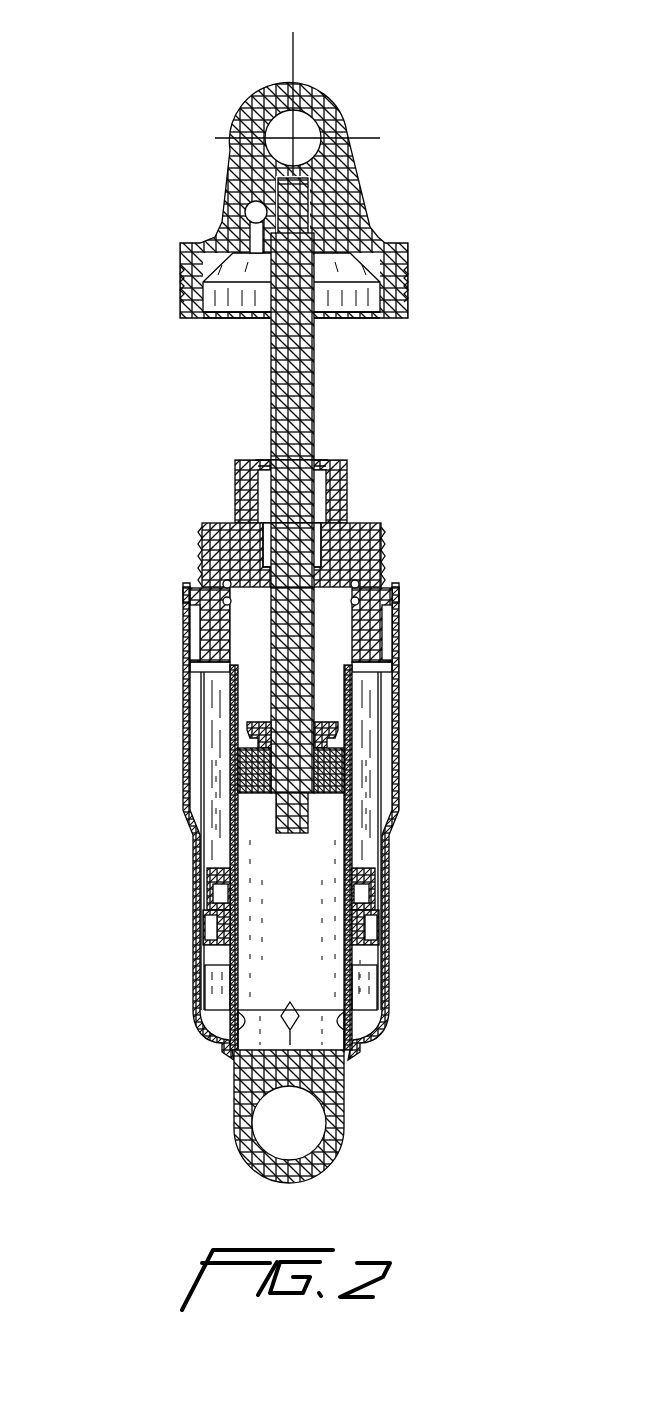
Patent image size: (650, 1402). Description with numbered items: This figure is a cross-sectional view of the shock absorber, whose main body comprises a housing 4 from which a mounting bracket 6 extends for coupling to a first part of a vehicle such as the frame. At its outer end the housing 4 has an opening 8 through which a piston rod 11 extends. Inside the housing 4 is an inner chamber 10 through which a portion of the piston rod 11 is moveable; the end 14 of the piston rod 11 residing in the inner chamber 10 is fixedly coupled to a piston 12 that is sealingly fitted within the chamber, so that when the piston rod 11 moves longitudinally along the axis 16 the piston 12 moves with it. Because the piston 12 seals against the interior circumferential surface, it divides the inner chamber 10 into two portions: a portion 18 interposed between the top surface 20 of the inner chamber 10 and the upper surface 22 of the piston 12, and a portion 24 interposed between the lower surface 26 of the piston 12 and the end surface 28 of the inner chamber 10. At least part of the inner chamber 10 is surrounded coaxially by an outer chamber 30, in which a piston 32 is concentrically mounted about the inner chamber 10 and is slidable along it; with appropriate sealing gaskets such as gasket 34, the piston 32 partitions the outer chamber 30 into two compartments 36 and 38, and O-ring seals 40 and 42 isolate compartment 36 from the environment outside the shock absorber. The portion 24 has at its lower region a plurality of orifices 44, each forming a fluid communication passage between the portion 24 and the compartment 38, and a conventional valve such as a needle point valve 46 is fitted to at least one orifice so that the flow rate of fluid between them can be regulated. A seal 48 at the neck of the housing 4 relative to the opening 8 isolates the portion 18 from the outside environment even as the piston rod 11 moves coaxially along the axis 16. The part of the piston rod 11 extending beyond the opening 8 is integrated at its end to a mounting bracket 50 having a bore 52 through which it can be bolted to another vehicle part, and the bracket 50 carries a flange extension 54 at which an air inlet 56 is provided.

The housing 4 is at (183, 737).
The mounting bracket 6 is at (234, 1130).
The opening 8 is at (350, 540).
The inner chamber 10 is at (357, 842).
The piston rod 11 is at (271, 370).
The piston 12 is at (352, 780).
The end of piston rod 14 is at (292, 920).
The axis 16 is at (292, 53).
The portion of inner chamber 18 is at (354, 697).
The top surface of inner chamber 20 is at (400, 589).
The upper surface of piston 22 is at (354, 733).
The portion of inner chamber 24 is at (354, 930).
The lower surface of piston 26 is at (346, 807).
The end surface of inner chamber 28 is at (348, 1074).
The outer chamber 30 is at (201, 800).
The piston 32 is at (207, 905).
The sealing gasket 34 is at (201, 928).
The compartment 36 is at (222, 697).
The compartment 38 is at (215, 990).
The O-ring seal 40 is at (183, 612).
The O-ring seal 42 is at (205, 585).
The orifices 44 is at (378, 992).
The needle point valve 46 is at (305, 995).
The seal 48 is at (237, 490).
The mounting bracket 50 is at (355, 172).
The bore 52 is at (312, 133).
The flange extension 54 is at (397, 257).
The air inlet 56 is at (226, 222).